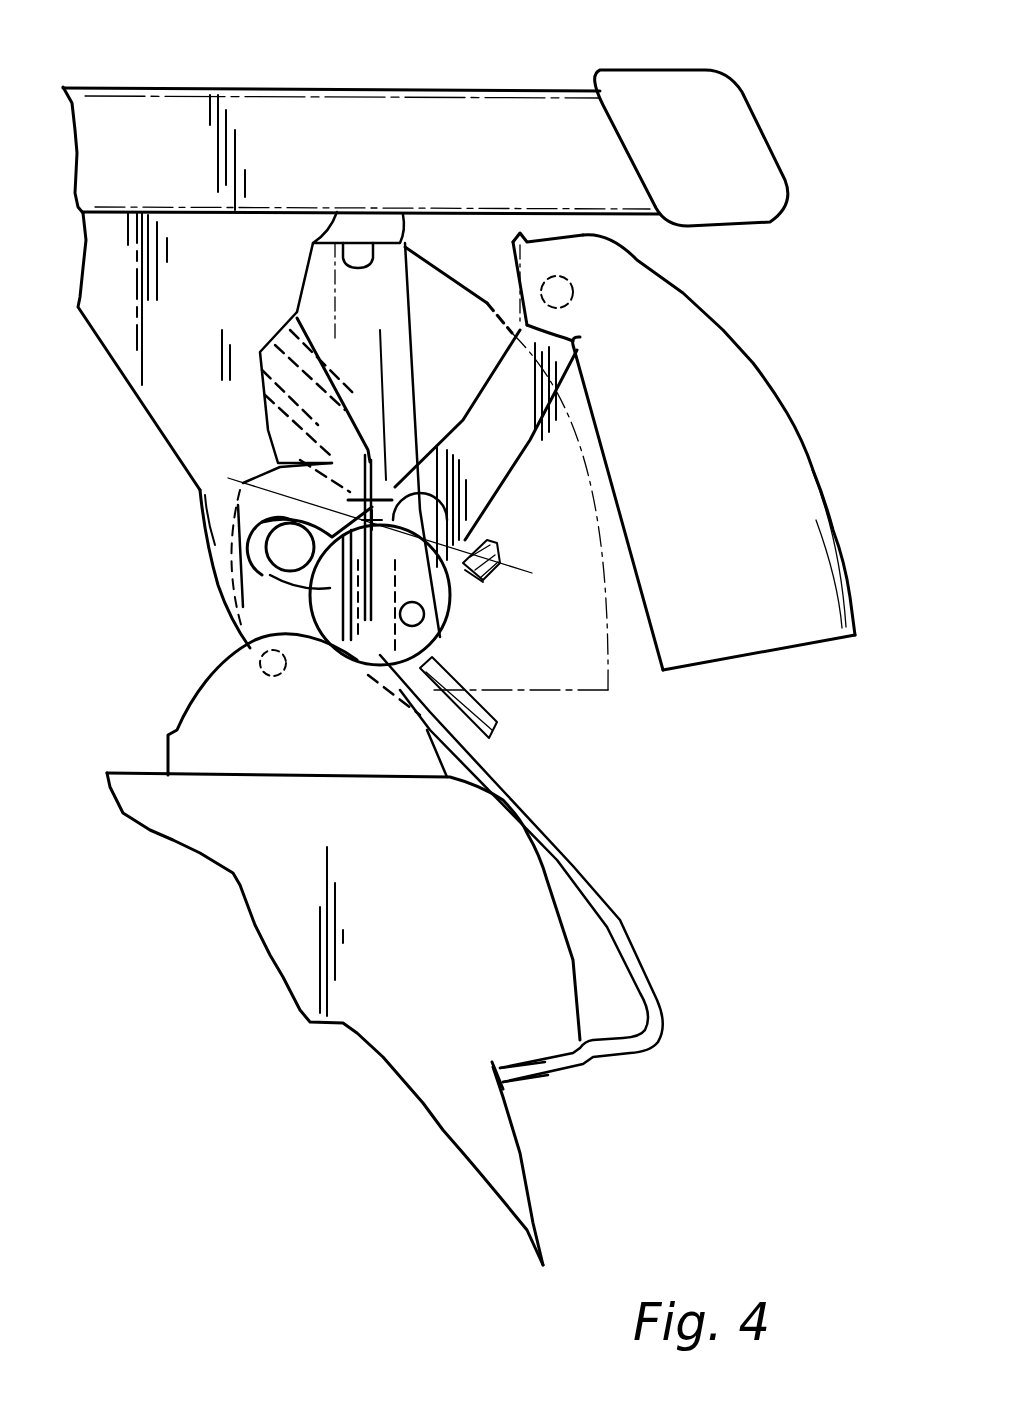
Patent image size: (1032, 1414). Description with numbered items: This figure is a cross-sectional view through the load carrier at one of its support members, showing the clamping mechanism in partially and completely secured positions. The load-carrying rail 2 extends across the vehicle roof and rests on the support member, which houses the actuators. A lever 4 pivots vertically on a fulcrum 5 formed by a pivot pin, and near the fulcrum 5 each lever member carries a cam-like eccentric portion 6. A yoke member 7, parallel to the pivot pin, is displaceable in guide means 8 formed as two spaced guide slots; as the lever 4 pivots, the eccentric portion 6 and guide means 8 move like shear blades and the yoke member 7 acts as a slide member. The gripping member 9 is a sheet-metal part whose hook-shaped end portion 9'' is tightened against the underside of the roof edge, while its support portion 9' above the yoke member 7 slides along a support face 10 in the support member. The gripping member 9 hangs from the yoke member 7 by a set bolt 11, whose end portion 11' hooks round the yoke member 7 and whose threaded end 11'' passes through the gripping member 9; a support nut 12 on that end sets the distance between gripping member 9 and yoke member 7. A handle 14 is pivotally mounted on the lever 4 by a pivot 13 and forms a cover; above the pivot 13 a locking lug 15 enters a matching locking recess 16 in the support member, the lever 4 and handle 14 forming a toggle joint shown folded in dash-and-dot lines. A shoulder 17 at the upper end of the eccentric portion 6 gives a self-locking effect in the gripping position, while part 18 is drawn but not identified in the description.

The load-carrying rail 2 is at (340, 102).
The lever 4 is at (490, 450).
The fulcrum 5 is at (422, 620).
The cam-like eccentric portion 6 is at (310, 624).
The yoke member 7 is at (292, 548).
The guide means 8 is at (305, 598).
The gripping member 9 is at (527, 868).
The support portion 9' is at (322, 393).
The hook-shaped end portion 9'' is at (566, 1102).
The support face 10 is at (265, 412).
The set bolt 11 is at (204, 434).
The end portion of the set bolt 11' is at (152, 491).
The threaded end of the set bolt 11'' is at (519, 602).
The support nut 12 is at (350, 658).
The pivot 13 is at (569, 298).
The handle 14 is at (763, 437).
The locking lug 15 is at (514, 246).
The locking recess 16 is at (373, 252).
The shoulder 17 is at (370, 500).
The bolt 18 is at (505, 567).